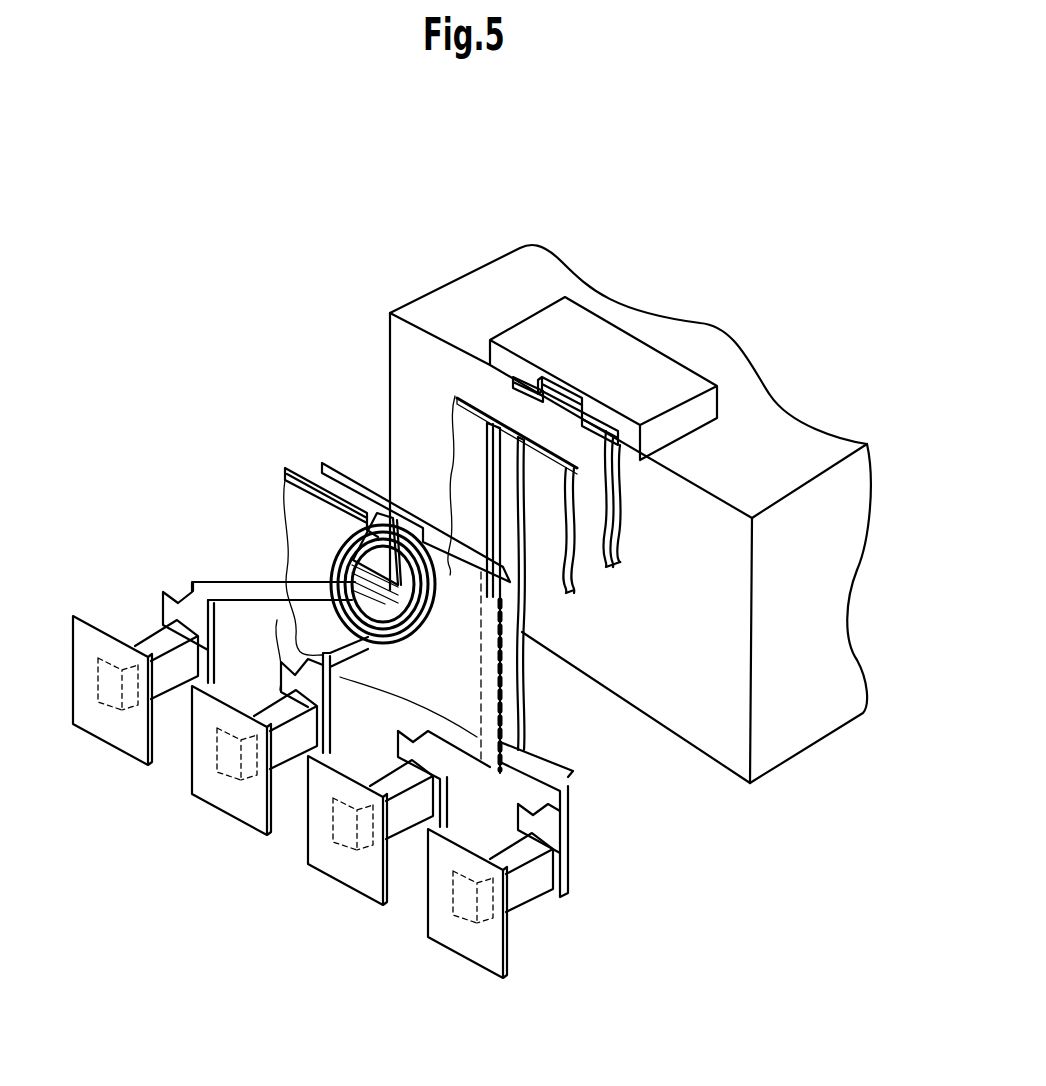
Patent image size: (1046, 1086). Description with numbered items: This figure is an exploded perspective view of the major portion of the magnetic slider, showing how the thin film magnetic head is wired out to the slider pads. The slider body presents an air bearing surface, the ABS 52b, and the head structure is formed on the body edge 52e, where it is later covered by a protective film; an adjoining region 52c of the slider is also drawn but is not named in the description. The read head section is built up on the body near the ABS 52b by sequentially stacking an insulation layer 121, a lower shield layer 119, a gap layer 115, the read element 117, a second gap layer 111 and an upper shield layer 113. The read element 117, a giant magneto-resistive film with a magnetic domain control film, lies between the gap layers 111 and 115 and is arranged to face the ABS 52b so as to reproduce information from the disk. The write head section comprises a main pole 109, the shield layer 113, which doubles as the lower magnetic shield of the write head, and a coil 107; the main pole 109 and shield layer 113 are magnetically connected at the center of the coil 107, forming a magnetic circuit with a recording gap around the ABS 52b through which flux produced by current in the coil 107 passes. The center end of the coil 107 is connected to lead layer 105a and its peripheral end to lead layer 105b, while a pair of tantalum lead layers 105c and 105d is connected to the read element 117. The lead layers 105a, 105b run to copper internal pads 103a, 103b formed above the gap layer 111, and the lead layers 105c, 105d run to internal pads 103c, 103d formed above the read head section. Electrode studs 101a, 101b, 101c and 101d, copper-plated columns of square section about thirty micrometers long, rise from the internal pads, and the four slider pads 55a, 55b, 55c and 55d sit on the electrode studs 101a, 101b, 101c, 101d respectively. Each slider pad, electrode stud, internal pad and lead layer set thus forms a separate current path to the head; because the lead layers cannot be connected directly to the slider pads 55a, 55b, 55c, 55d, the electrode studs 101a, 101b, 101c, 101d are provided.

The ABS 52b is at (508, 270).
The housing protrusion 52c is at (642, 360).
The body edge 52e is at (737, 728).
The slider pad 55a is at (97, 740).
The slider pad 55b is at (205, 797).
The slider pad 55c is at (320, 868).
The slider pad 55d is at (442, 940).
The electrode stud 101a is at (148, 631).
The electrode stud 101b is at (268, 700).
The electrode stud 101c is at (386, 770).
The electrode stud 101d is at (506, 842).
The internal pad 103a is at (162, 598).
The internal pad 103b is at (258, 668).
The internal pad 103c is at (378, 742).
The internal pad 103d is at (500, 812).
The lead layer 105a is at (253, 580).
The lead layer 105b is at (370, 653).
The lead layer 105c is at (478, 460).
The lead layer 105d is at (560, 490).
The coil 107 is at (435, 645).
The main pole 109 is at (377, 548).
The gap layer 111 is at (345, 462).
The upper shield layer 113 is at (285, 468).
The gap layer 115 is at (455, 396).
The read element 117 is at (506, 420).
The lower shield layer 119 is at (550, 377).
The insulation layer 121 is at (570, 384).